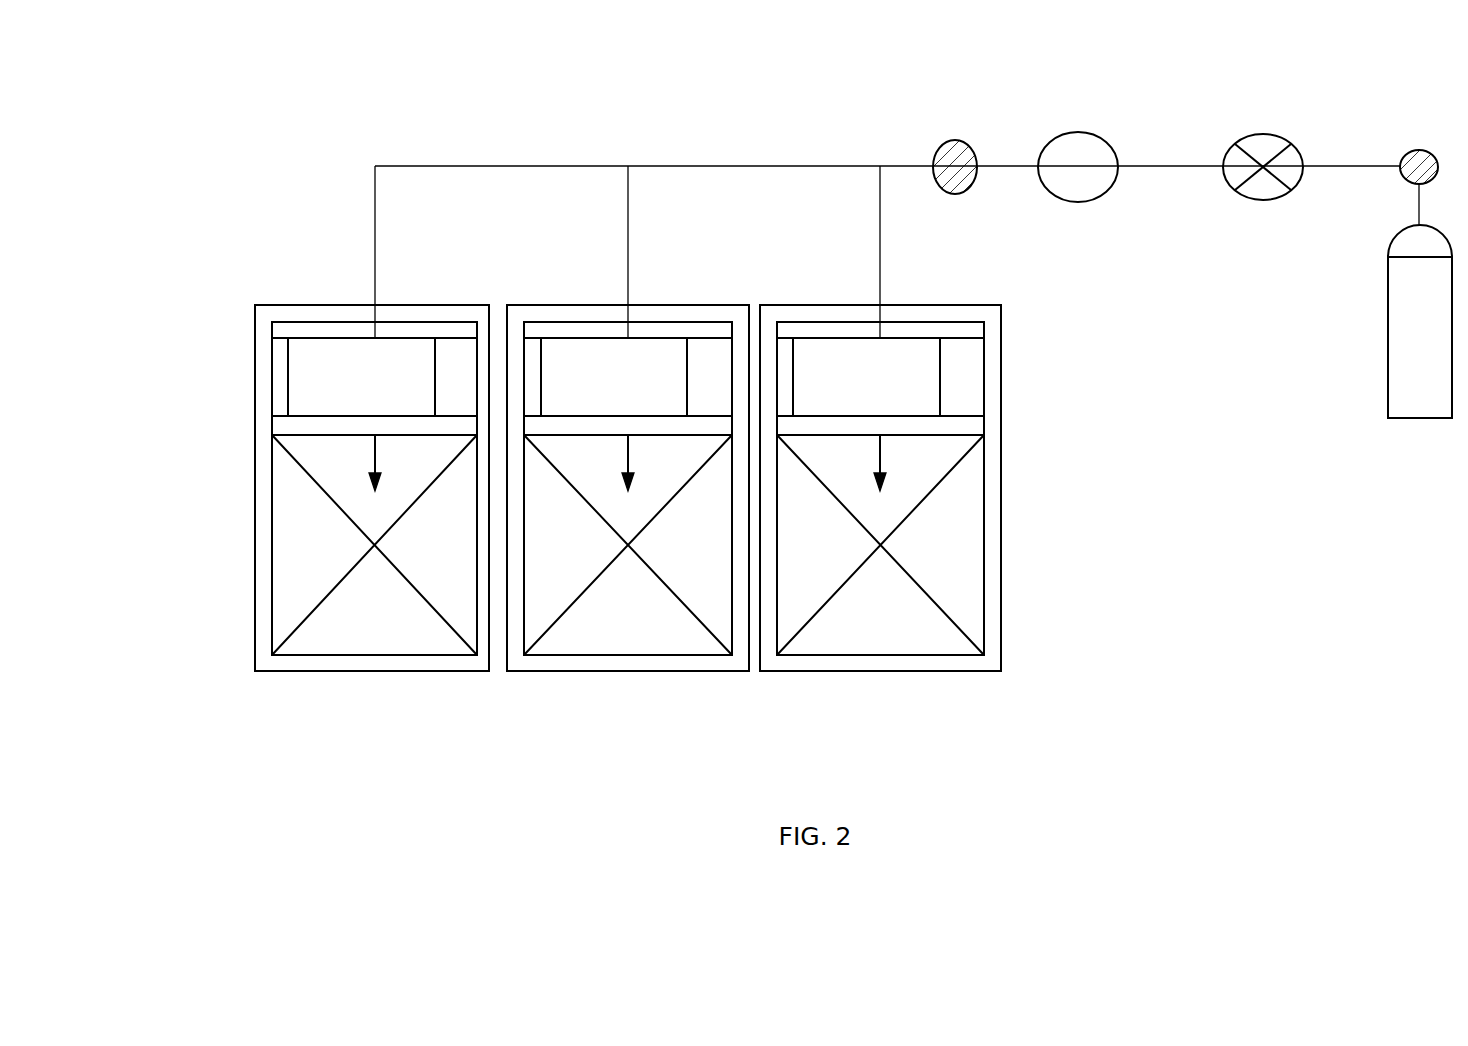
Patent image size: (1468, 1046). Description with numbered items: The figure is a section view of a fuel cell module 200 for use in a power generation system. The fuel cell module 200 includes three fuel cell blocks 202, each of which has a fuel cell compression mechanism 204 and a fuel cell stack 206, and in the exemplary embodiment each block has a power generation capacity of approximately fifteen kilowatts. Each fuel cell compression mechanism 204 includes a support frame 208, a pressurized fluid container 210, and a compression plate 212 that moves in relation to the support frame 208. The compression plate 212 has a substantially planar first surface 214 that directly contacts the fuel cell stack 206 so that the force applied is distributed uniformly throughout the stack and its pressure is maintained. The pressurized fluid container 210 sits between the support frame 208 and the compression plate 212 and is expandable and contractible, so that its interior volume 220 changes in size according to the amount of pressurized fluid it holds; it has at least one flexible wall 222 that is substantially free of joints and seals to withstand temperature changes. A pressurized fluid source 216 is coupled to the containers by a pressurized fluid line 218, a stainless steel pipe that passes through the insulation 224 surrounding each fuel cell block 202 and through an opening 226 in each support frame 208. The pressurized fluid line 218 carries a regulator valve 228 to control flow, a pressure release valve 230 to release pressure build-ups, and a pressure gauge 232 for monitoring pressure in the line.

The fuel cell module 200 is at (182, 248).
The fuel cell block 202 is at (375, 672).
The fuel cell compression mechanism 204 is at (258, 378).
The fuel cell stack 206 is at (315, 643).
The support frame 208 is at (283, 322).
The pressurized fluid container 210 is at (305, 397).
The compression plate 212 is at (298, 427).
The first surface 214 is at (330, 438).
The pressurized fluid source 216 is at (1388, 335).
The pressurized fluid line 218 is at (1175, 165).
The interior volume 220 is at (317, 352).
The flexible wall 222 is at (413, 355).
The insulation 224 is at (465, 663).
The opening 226 is at (350, 355).
The regulator valve 228 is at (1268, 148).
The pressure release valve 230 is at (1078, 132).
The pressure gauge 232 is at (955, 140).